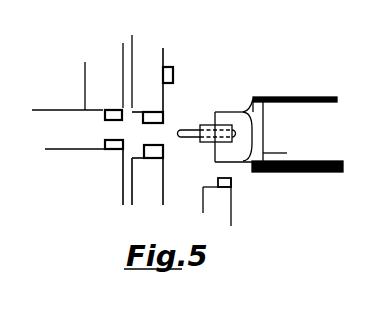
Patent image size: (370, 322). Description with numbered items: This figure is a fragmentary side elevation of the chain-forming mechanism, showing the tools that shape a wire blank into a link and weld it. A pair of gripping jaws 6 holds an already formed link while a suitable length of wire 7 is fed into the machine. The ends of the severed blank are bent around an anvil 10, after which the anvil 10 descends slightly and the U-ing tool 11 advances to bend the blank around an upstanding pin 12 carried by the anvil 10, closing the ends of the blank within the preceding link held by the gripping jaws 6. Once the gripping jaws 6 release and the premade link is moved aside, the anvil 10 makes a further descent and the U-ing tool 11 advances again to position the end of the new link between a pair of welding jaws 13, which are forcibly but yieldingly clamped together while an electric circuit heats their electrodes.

The gripping jaws 6 is at (158, 101).
The wire 7 is at (198, 129).
The anvil 10 is at (225, 215).
The U-ing tool 11 is at (310, 97).
The upstanding pin 12 is at (231, 183).
The welding jaws 13 is at (103, 103).